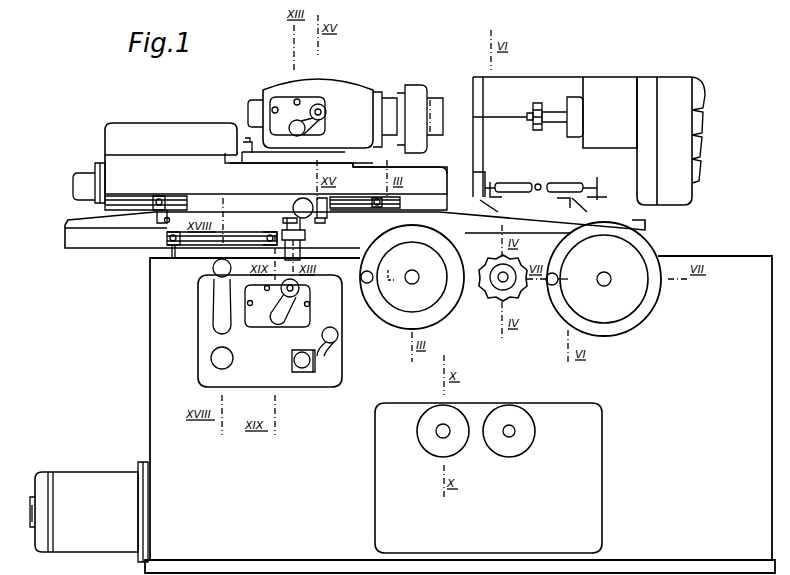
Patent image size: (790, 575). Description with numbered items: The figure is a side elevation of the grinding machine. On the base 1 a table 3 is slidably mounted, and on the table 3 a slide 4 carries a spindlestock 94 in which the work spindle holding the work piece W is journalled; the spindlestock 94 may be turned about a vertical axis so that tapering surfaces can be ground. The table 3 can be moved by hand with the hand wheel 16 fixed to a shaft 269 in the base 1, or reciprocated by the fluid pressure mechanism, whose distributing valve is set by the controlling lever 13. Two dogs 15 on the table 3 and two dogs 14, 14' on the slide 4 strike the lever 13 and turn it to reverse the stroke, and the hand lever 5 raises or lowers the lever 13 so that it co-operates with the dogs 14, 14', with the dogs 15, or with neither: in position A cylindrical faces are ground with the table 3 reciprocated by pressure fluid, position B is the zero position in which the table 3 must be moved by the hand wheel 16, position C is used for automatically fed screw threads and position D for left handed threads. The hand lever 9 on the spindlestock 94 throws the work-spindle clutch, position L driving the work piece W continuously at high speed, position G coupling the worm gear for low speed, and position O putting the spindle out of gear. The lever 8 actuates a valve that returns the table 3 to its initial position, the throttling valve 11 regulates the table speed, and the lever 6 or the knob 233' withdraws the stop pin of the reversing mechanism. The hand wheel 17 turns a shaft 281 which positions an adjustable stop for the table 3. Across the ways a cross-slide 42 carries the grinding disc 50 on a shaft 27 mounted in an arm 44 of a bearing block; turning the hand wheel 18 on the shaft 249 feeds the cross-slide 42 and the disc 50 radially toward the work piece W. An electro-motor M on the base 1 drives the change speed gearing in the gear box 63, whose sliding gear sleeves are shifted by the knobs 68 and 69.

The base 1 is at (172, 428).
The table 3 is at (87, 245).
The slide 4 is at (117, 167).
The hand lever 5 is at (286, 312).
The lever 6 is at (325, 362).
The lever 8 is at (220, 310).
The hand lever 9 is at (312, 126).
The throttling valve 11 is at (213, 356).
The controlling lever 13 is at (293, 198).
The dogs 14 is at (146, 234).
The stop 14' is at (357, 216).
The dogs 15 is at (175, 250).
The hand wheel 16 is at (397, 322).
The hand wheel 17 is at (520, 288).
The hand wheel 18 is at (628, 325).
The shaft 27 is at (568, 105).
The cross-slide 42 is at (550, 144).
The arm 44 is at (623, 95).
The grinding disc 50 is at (537, 103).
The gear box 63 is at (582, 475).
The knob 68 is at (430, 433).
The knob 69 is at (517, 422).
The spindlestock 94 is at (355, 103).
The knob 233' is at (313, 382).
The shaft 249 is at (609, 283).
The shaft 269 is at (415, 273).
The shaft 281 is at (501, 279).
The position A is at (251, 306).
The position B is at (264, 288).
The position C is at (300, 288).
The position D is at (310, 304).
The position G is at (274, 106).
The position L is at (326, 114).
The electro-motor M is at (88, 488).
The position 0 (zero) O is at (298, 99).
The work piece W is at (432, 96).